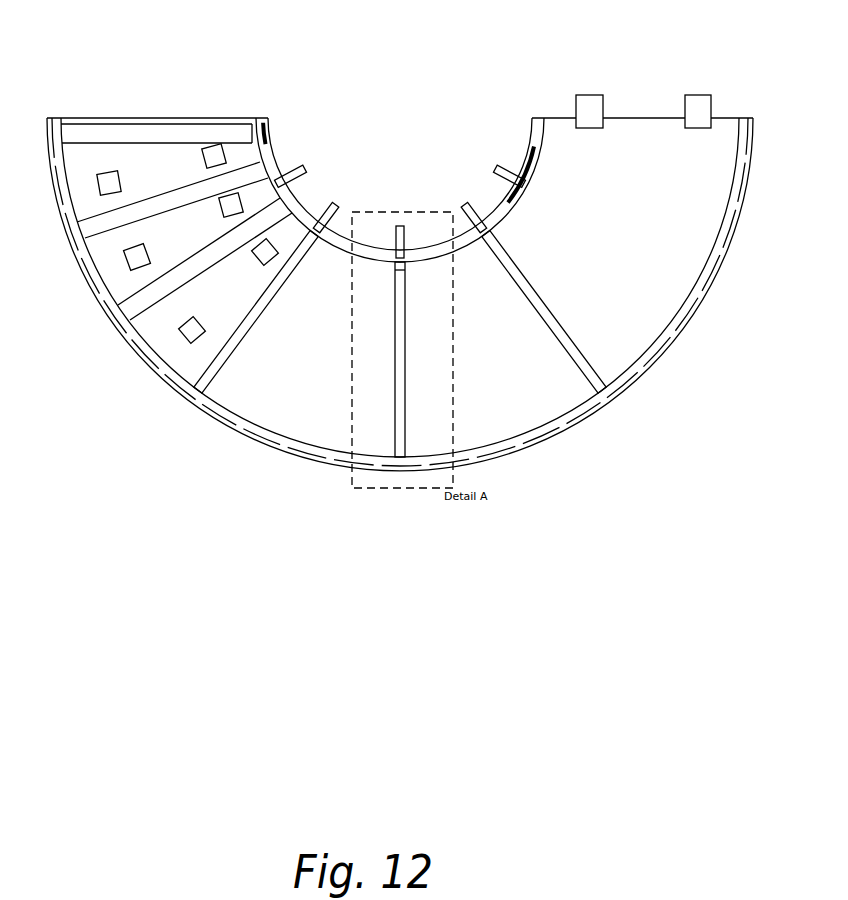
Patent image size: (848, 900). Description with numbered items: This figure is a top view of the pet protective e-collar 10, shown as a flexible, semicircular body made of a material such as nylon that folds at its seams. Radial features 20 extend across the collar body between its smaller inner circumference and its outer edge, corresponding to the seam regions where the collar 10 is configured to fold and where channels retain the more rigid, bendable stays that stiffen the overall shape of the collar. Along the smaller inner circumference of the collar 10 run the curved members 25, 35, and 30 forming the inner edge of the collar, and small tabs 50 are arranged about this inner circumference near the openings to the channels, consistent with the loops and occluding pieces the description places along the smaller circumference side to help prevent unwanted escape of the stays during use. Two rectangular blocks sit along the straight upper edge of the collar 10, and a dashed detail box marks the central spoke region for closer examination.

The pet protective e-collar 10 is at (625, 330).
The radial spoke rib 20 is at (535, 300).
The inner ring 25 is at (318, 222).
The inner ring rail 35 is at (400, 184).
The ring hub member 30 is at (493, 208).
The mounting tab 50 is at (335, 204).